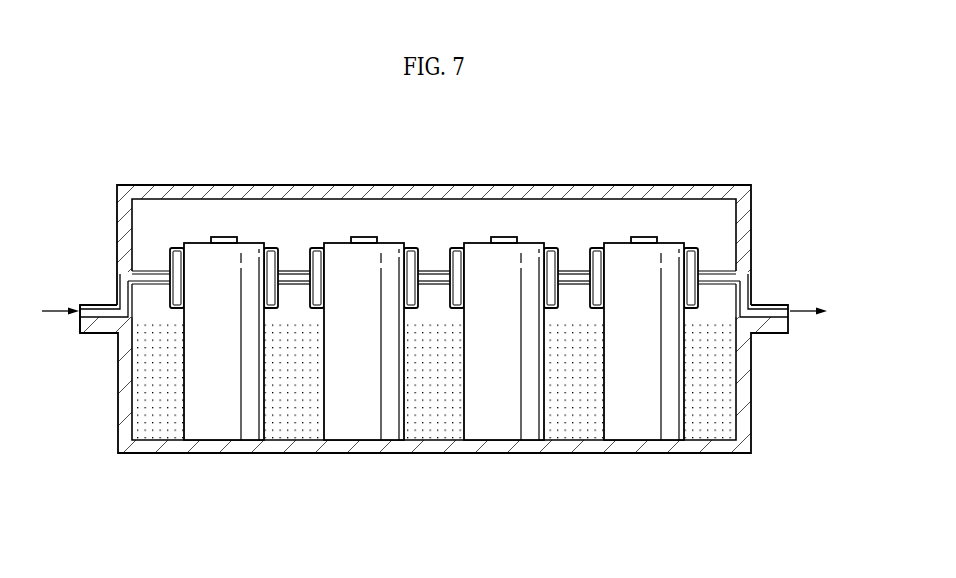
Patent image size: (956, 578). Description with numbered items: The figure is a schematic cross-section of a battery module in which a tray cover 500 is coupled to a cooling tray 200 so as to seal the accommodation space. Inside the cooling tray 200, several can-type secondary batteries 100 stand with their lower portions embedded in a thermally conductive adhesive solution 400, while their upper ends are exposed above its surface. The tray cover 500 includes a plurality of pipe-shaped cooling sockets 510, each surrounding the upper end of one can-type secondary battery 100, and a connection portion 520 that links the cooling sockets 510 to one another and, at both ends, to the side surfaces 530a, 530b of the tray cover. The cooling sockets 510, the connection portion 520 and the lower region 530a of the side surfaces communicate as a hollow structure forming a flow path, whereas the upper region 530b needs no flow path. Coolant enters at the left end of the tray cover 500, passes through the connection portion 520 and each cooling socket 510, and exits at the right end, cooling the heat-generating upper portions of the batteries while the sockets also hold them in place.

The can-type secondary battery 100 is at (667, 241).
The cooling tray 200 is at (772, 366).
The thermally conductive adhesive solution 400 is at (722, 408).
The tray cover 500 is at (440, 284).
The cooling socket 510 is at (311, 248).
The connection portion 520 is at (150, 270).
The lower region of tray cover side surface 530a is at (117, 284).
The upper region of tray cover side surface 530b is at (117, 223).